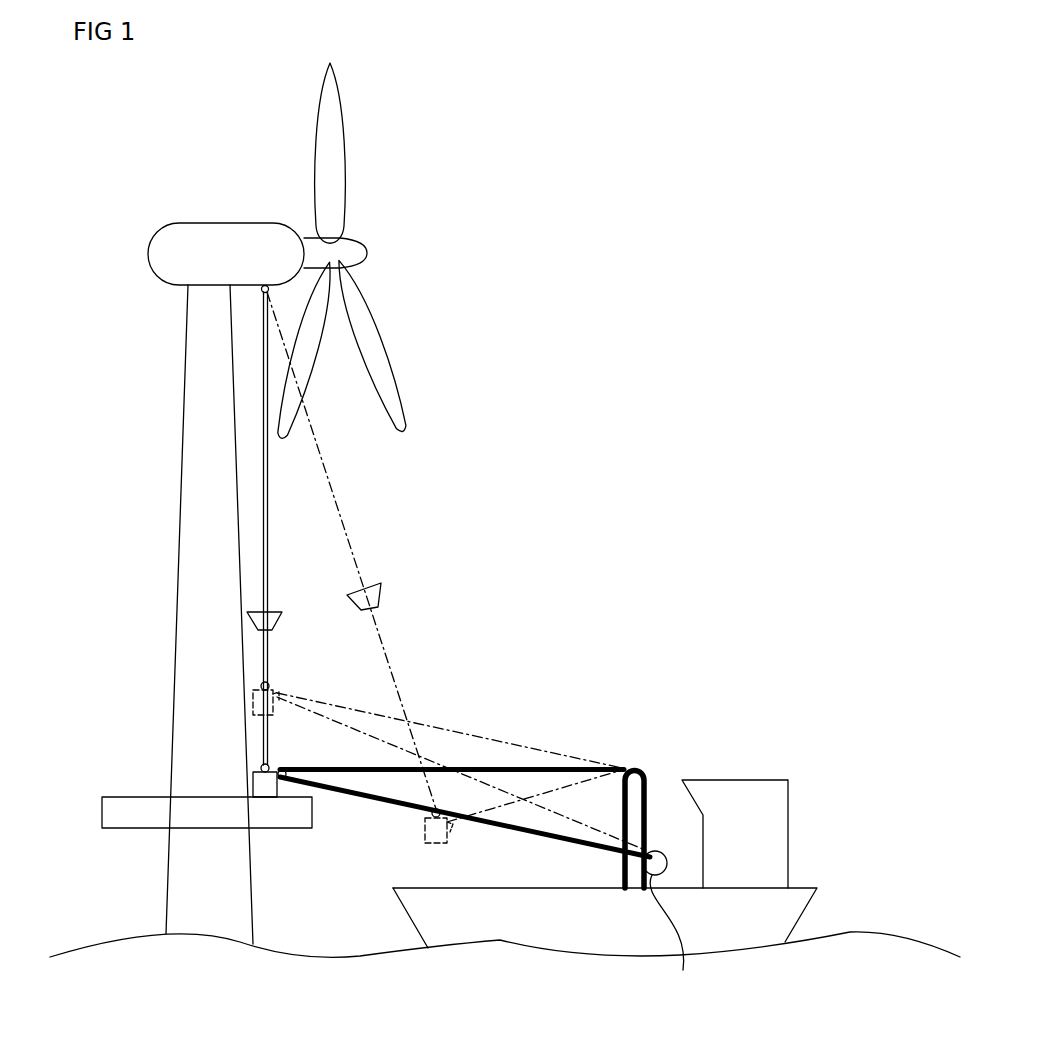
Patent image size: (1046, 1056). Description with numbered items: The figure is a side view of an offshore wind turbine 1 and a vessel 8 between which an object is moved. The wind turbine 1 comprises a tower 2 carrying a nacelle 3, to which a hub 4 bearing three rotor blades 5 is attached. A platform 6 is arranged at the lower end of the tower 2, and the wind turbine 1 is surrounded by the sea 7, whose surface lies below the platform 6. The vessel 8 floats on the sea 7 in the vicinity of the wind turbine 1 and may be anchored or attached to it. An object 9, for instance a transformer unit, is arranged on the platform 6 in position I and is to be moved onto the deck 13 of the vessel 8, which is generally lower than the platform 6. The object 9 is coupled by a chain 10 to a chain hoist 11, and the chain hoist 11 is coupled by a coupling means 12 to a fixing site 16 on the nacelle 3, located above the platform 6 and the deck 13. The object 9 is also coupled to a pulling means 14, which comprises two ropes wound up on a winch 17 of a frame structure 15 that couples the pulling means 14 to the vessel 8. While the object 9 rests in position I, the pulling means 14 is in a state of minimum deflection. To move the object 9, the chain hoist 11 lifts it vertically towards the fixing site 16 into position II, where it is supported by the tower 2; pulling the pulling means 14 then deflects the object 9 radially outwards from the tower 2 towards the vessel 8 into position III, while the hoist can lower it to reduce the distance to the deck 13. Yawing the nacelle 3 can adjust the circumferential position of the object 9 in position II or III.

The offshore wind turbine 1 is at (614, 116).
The tower 2 is at (165, 882).
The nacelle 3 is at (220, 223).
The hub 4 is at (367, 255).
The rotor blades 5 is at (347, 148).
The platform 6 is at (102, 812).
The sea 7 is at (922, 938).
The vessel 8 is at (800, 915).
The object 9 is at (250, 787).
The chain 10 is at (262, 684).
The chain hoist 11 is at (382, 590).
The coupling means 12 is at (355, 527).
The deck 13 is at (512, 888).
The pulling means 14 is at (340, 790).
The frame structure 15 is at (632, 782).
The fixing site 16 is at (264, 285).
The winch 17 is at (675, 940).
The position I is at (249, 771).
The position II is at (276, 686).
The position III is at (422, 838).